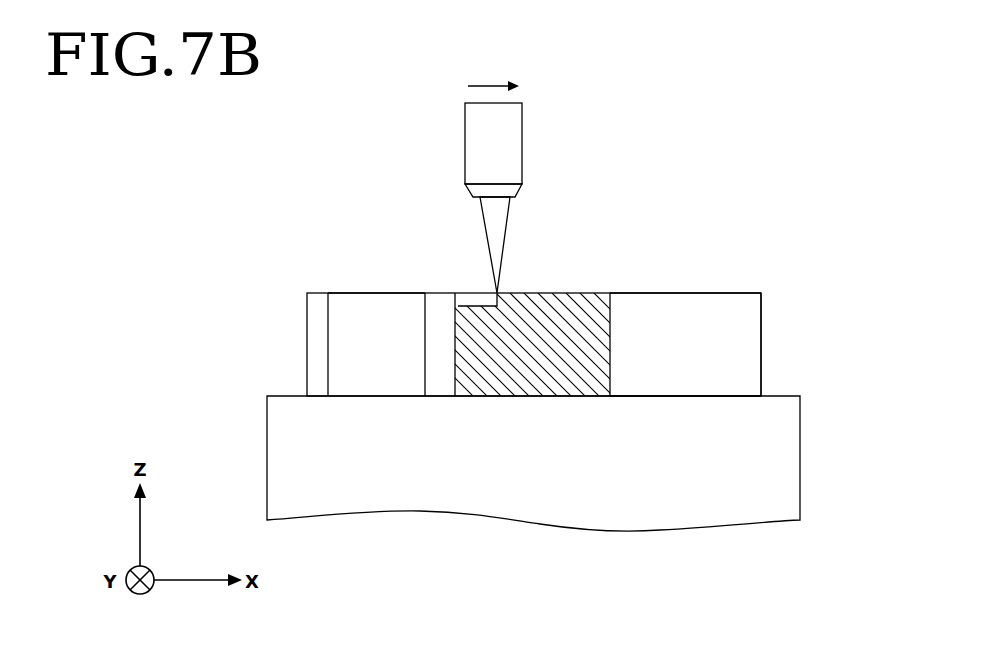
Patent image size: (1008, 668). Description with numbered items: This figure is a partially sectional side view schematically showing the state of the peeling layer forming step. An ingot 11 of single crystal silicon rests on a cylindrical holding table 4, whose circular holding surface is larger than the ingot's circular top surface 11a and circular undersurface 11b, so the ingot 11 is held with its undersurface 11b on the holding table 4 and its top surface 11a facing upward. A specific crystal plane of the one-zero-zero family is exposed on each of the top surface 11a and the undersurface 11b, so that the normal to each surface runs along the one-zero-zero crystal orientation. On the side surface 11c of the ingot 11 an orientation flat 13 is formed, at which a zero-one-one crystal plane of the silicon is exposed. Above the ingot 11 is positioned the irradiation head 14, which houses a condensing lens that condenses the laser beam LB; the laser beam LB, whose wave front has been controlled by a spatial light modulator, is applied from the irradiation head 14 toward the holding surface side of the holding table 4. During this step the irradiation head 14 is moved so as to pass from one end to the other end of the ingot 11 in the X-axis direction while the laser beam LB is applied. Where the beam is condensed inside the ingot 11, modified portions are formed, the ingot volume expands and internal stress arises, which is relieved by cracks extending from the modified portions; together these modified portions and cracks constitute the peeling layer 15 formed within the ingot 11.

The holding table 4 is at (790, 492).
The ingot 11 is at (300, 264).
The orientation flat 13 is at (372, 305).
The peeling layer 15 is at (463, 301).
The top surface 11a is at (686, 292).
The side surface 11c is at (748, 320).
The undersurface 11b is at (735, 405).
The irradiation head 14 is at (468, 140).
The laser beam LB is at (508, 226).